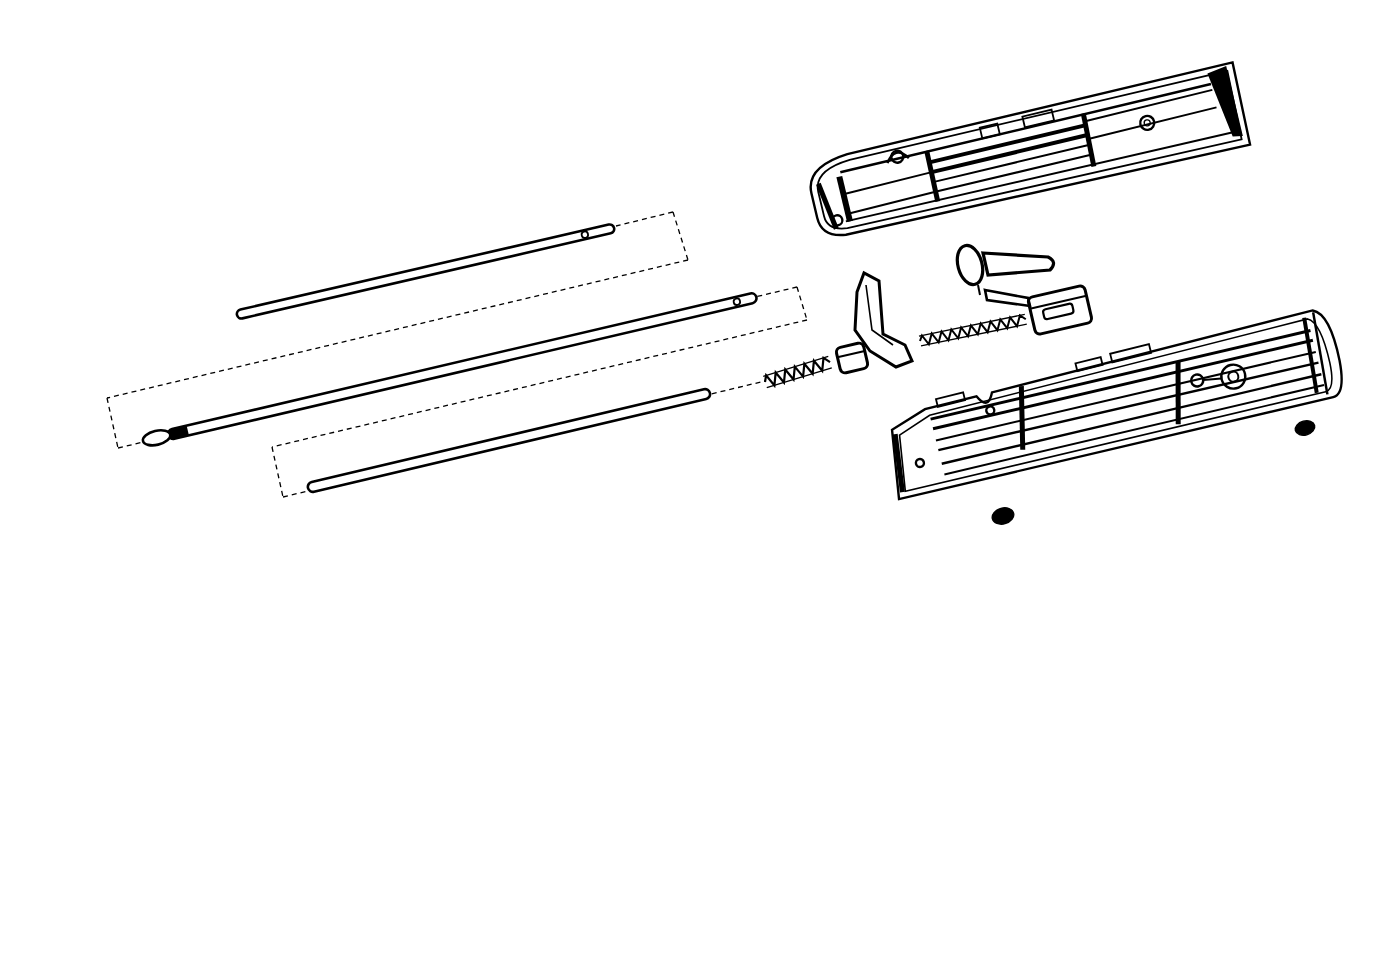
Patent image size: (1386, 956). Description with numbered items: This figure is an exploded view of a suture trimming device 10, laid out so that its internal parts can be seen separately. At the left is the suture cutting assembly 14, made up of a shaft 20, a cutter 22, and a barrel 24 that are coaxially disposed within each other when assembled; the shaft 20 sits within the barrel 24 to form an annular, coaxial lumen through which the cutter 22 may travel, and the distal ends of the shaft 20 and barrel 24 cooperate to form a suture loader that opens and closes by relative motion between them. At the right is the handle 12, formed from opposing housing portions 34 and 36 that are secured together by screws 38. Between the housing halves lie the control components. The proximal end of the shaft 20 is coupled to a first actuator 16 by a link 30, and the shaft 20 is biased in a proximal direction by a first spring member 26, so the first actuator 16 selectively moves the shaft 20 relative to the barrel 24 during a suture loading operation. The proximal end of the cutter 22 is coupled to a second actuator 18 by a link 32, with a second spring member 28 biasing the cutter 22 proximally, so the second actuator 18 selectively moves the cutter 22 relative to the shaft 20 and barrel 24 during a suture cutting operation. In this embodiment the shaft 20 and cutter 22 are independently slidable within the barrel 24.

The suture trimming device 10 is at (586, 124).
The handle 12 is at (971, 66).
The suture cutting assembly 14 is at (326, 245).
The first actuator 16 is at (1033, 246).
The second actuator 18 is at (880, 284).
The shaft 20 is at (475, 360).
The cutter 22 is at (443, 463).
The barrel 24 is at (448, 258).
The first spring member 26 is at (978, 338).
The second spring member 28 is at (785, 397).
The link 30 is at (1097, 305).
The link 32 is at (866, 366).
The housing portion 34 is at (1117, 93).
The housing portion 36 is at (1240, 330).
The screws 38 is at (1316, 432).